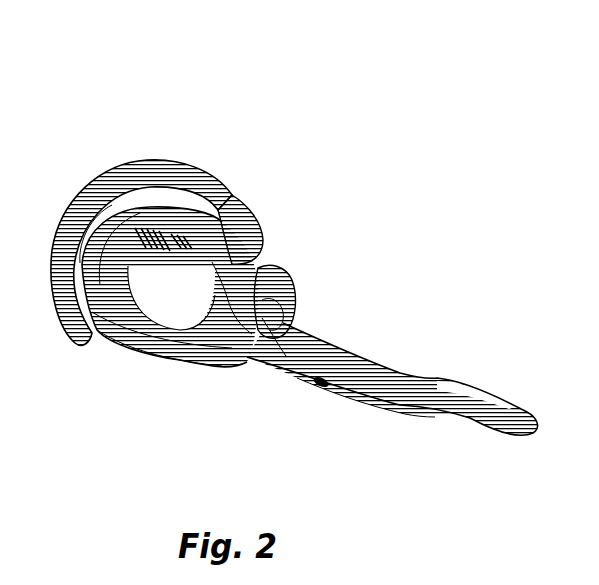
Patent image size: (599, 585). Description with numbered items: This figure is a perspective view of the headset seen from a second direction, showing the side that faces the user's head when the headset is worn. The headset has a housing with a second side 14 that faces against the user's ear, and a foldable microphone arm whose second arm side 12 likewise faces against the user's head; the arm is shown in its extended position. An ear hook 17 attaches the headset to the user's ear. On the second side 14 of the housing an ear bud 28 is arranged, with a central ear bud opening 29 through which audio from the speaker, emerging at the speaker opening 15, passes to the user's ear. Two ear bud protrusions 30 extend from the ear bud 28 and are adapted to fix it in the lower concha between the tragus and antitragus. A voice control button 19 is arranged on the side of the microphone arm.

The second arm side 12 is at (338, 342).
The second side 14 is at (88, 190).
The speaker opening 15 is at (121, 280).
The ear hook 17 is at (187, 157).
The voice control button 19 is at (322, 386).
The ear bud 28 is at (155, 290).
The central ear bud opening 29 is at (160, 205).
The ear bud protrusions 30 is at (262, 260).